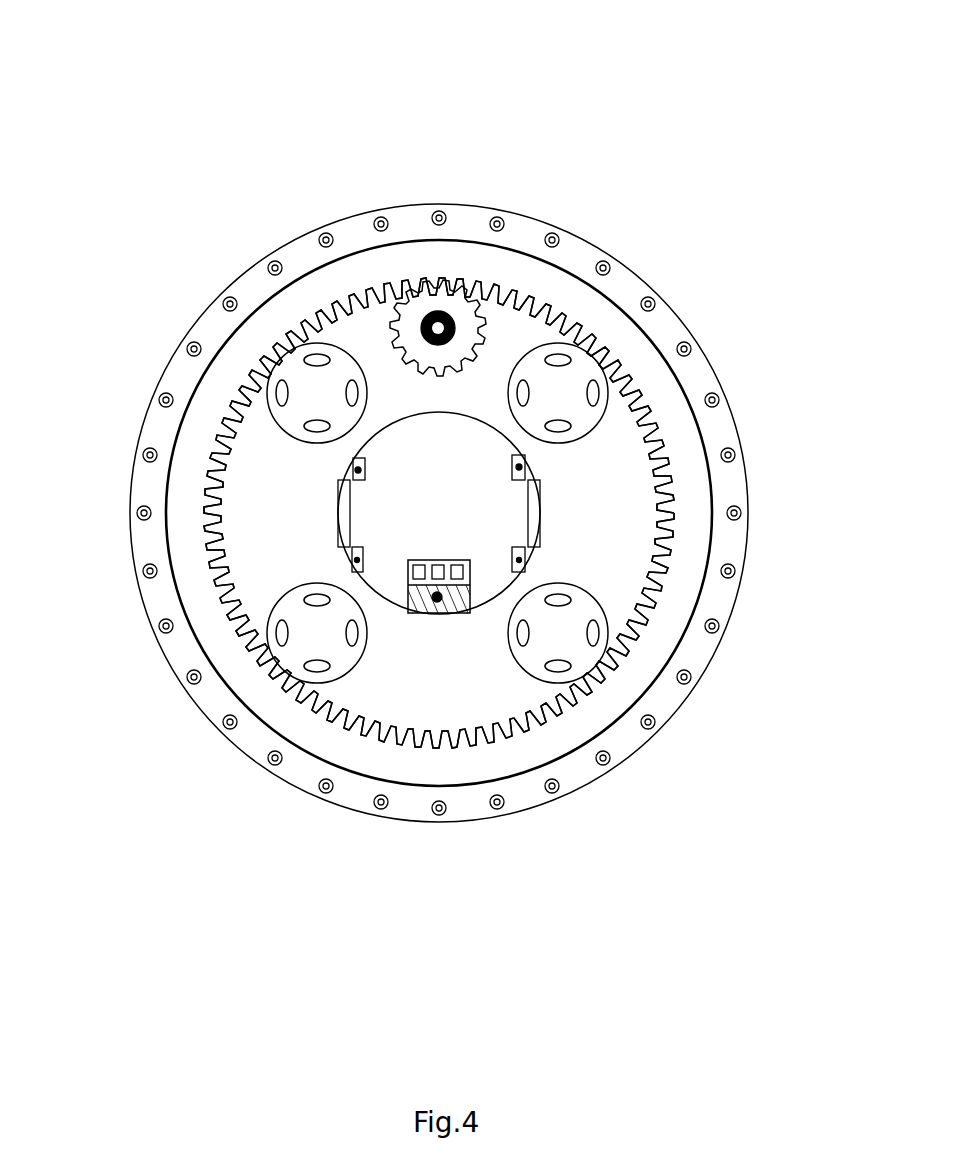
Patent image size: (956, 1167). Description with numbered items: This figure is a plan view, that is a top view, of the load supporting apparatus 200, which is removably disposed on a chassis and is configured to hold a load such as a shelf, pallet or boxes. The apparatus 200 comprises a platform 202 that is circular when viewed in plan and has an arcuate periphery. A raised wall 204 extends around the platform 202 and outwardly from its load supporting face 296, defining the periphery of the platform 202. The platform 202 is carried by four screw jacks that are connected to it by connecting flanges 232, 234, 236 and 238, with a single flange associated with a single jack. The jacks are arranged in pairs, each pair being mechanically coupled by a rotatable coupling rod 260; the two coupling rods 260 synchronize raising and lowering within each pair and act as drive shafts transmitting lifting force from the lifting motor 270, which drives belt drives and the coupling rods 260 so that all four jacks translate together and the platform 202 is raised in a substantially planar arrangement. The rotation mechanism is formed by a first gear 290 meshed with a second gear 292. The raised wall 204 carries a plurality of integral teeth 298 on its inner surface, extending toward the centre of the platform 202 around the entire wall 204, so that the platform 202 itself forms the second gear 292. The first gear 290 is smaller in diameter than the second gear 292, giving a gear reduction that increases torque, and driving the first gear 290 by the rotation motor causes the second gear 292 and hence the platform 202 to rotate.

The load supporting apparatus 200 is at (330, 100).
The platform 202 is at (636, 530).
The raised wall 204 is at (177, 482).
The connecting flange 232 is at (551, 630).
The connecting flange 234 is at (313, 640).
The connecting flange 236 is at (313, 390).
The connecting flange 238 is at (548, 393).
The coupling rod 260 is at (345, 507).
The lifting motor 270 is at (437, 598).
The first gear 290 is at (440, 318).
The second gear 292 is at (485, 748).
The load supporting face 296 is at (380, 653).
The integral teeth 298 is at (668, 498).